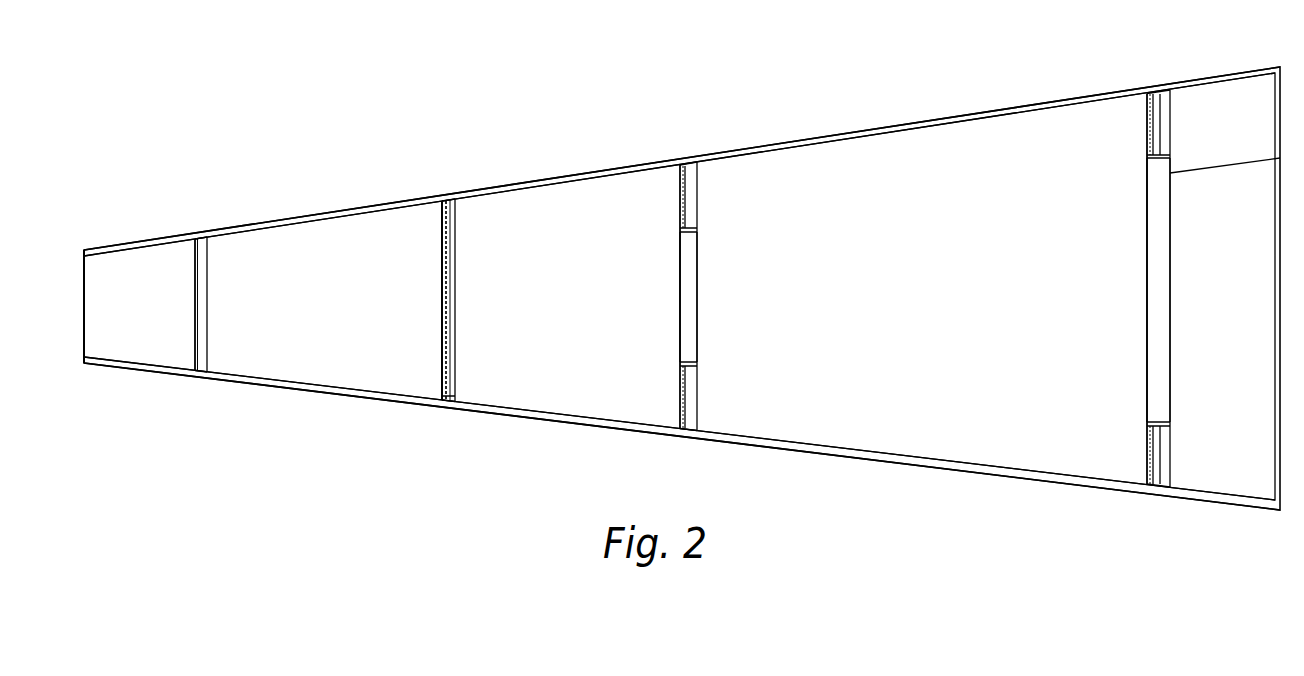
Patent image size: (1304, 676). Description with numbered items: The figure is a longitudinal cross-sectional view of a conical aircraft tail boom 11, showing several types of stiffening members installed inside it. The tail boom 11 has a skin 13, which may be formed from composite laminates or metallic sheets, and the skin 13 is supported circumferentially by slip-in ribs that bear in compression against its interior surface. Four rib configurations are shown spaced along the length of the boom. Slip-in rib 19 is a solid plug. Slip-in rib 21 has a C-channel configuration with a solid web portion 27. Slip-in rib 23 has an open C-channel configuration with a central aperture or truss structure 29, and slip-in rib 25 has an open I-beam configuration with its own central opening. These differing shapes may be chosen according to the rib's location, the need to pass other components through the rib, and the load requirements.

The tail boom 11 is at (518, 103).
The skin 13 is at (870, 132).
The slip-in rib 19 is at (195, 260).
The slip-in rib 21 is at (442, 222).
The slip-in rib 23 is at (680, 187).
The slip-in rib 25 is at (1170, 187).
The solid web portion 27 is at (442, 312).
The central aperture or truss structure 29 is at (697, 295).